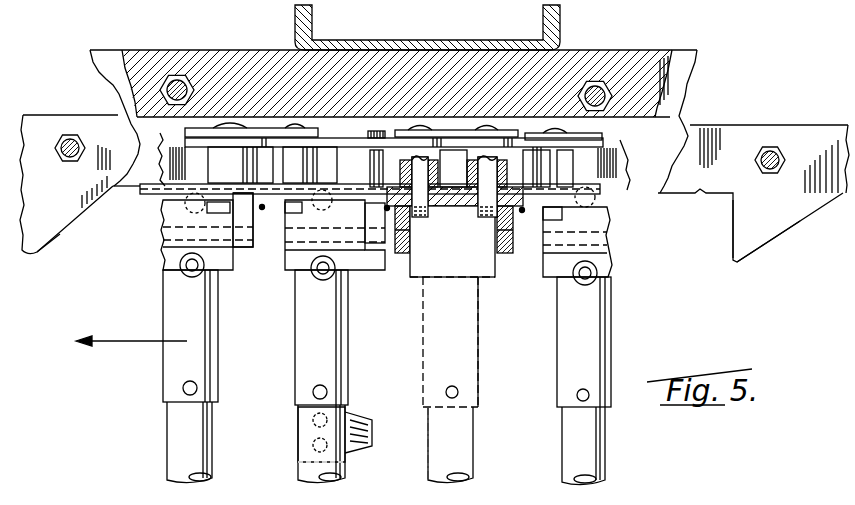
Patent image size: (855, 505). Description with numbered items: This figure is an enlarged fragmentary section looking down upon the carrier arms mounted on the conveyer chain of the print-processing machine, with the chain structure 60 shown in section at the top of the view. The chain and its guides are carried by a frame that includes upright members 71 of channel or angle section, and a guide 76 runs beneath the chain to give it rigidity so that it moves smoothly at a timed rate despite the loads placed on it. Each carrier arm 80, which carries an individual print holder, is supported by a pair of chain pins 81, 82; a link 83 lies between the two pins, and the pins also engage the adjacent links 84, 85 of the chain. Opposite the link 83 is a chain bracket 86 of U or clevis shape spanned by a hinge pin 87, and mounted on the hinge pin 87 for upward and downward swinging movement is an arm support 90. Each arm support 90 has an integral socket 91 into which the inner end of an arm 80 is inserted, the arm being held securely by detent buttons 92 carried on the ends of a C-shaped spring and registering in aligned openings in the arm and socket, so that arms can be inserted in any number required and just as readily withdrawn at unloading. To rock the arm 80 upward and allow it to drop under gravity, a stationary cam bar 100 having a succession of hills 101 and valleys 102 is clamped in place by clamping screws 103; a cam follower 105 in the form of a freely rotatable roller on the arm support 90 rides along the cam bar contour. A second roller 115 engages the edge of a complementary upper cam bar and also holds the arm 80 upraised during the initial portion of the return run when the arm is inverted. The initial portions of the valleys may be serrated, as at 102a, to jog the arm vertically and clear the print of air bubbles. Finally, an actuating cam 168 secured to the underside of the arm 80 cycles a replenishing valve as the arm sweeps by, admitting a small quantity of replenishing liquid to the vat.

The frame body 60 is at (262, 126).
The upright member 71 is at (312, 26).
The guide 76 is at (167, 150).
The carrier arm 80 is at (170, 432).
The chain pin 81 is at (312, 126).
The chain pin 82 is at (367, 133).
The link 83 is at (318, 133).
The adjacent link 84 is at (260, 150).
The adjacent link 85 is at (387, 150).
The chain bracket 86 is at (447, 206).
The hinge pin 87 is at (285, 255).
The arm support 90 is at (295, 290).
The socket 91 is at (217, 357).
The detent button 92 is at (197, 388).
The cam bar 100 is at (772, 240).
The hill 101 is at (27, 262).
The valley 102 is at (113, 190).
The serrated valley portion 102a is at (697, 197).
The clamping screw 103 is at (70, 140).
The cam follower 105 is at (167, 227).
The roller 115 is at (185, 273).
The actuating cam 168 is at (296, 440).